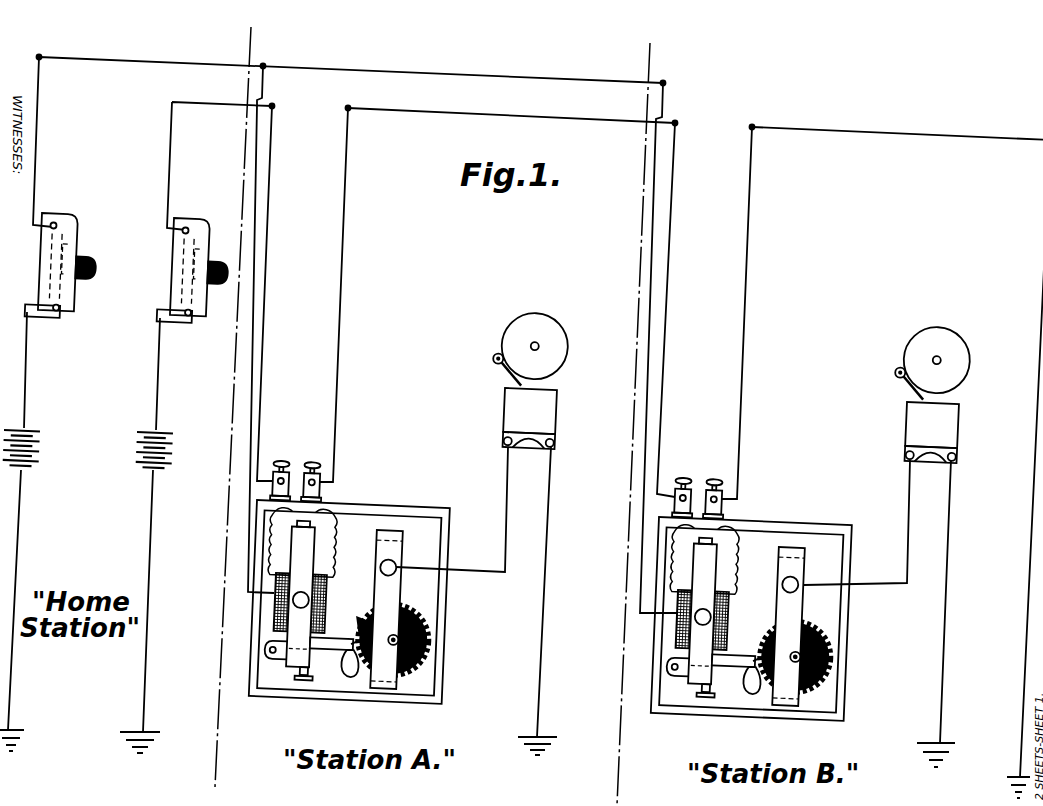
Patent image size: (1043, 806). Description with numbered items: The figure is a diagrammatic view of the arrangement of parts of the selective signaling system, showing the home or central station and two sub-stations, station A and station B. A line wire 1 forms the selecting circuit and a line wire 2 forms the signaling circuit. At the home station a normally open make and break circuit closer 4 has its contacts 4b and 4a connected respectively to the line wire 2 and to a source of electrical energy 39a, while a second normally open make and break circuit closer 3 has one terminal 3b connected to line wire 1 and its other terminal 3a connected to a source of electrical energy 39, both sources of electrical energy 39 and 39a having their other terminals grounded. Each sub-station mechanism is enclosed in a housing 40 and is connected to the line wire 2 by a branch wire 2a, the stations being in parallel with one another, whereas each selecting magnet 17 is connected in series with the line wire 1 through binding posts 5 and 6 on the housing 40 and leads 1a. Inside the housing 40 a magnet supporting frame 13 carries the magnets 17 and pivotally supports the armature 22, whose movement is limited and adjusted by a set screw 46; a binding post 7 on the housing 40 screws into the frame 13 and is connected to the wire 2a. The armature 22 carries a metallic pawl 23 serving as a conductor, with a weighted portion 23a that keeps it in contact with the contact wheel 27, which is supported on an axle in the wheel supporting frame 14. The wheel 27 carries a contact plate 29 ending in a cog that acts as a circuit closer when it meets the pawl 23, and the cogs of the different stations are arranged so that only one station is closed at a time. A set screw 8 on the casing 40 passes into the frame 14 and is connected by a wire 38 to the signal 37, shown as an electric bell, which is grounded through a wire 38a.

The line wire of the selecting circuit 1 is at (216, 106).
The leads 1a is at (340, 343).
The line wire of the signaling circuit 2 is at (166, 70).
The branch wires 2a is at (246, 395).
The second normally open make and break circuit closer 3 is at (190, 270).
The terminal 3a is at (192, 318).
The terminal 3b is at (188, 226).
The normally open make and break circuit closer 4 is at (52, 265).
The contact 4a is at (56, 222).
The contact 4b is at (60, 315).
The binding post 5 is at (281, 459).
The binding post 6 is at (313, 459).
The binding post 7 is at (303, 592).
The set screw 8 is at (380, 561).
The magnet supporting frame 13 is at (300, 618).
The wheel supporting frame 14 is at (404, 550).
The selecting magnet 17 is at (287, 574).
The armature 22 is at (330, 652).
The pawl 23 is at (356, 648).
The weighted portion 23a is at (350, 680).
The contact wheel 27 is at (415, 613).
The contact plate 29 is at (365, 628).
The signal 37 is at (731, 388).
The wire 38 is at (500, 536).
The wire 38a is at (547, 614).
The source of electrical energy 39 is at (169, 450).
The source of electrical energy 39a is at (38, 444).
The housing 40 is at (375, 508).
The set screw 46 is at (300, 679).